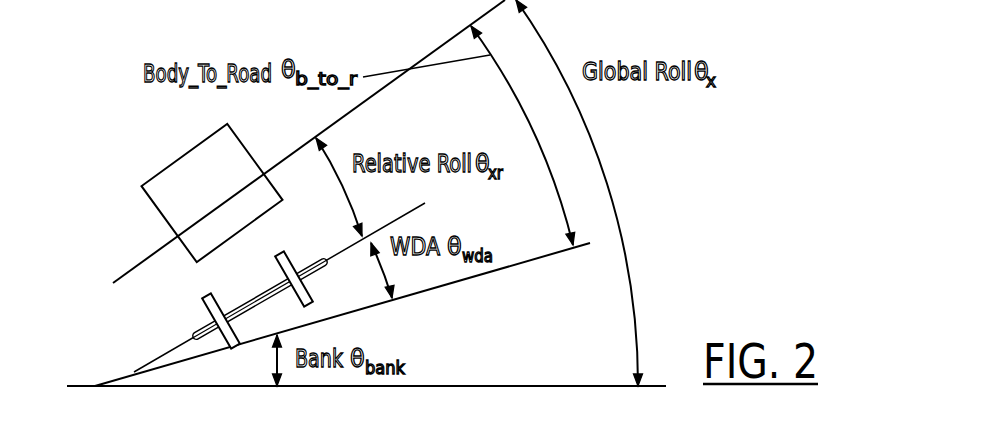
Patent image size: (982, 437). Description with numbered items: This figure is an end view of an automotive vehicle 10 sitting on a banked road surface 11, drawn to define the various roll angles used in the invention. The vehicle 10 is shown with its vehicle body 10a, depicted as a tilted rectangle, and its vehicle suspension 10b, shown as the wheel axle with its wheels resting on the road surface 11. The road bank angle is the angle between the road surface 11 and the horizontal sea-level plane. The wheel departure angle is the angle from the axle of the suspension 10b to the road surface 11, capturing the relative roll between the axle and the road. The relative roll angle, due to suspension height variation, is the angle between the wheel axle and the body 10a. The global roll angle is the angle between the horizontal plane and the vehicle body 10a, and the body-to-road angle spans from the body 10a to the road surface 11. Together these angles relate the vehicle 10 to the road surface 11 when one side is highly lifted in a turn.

The vehicle 10 is at (106, 230).
The vehicle body 10a is at (177, 162).
The vehicle suspension 10b is at (290, 256).
The road surface 11 is at (457, 282).